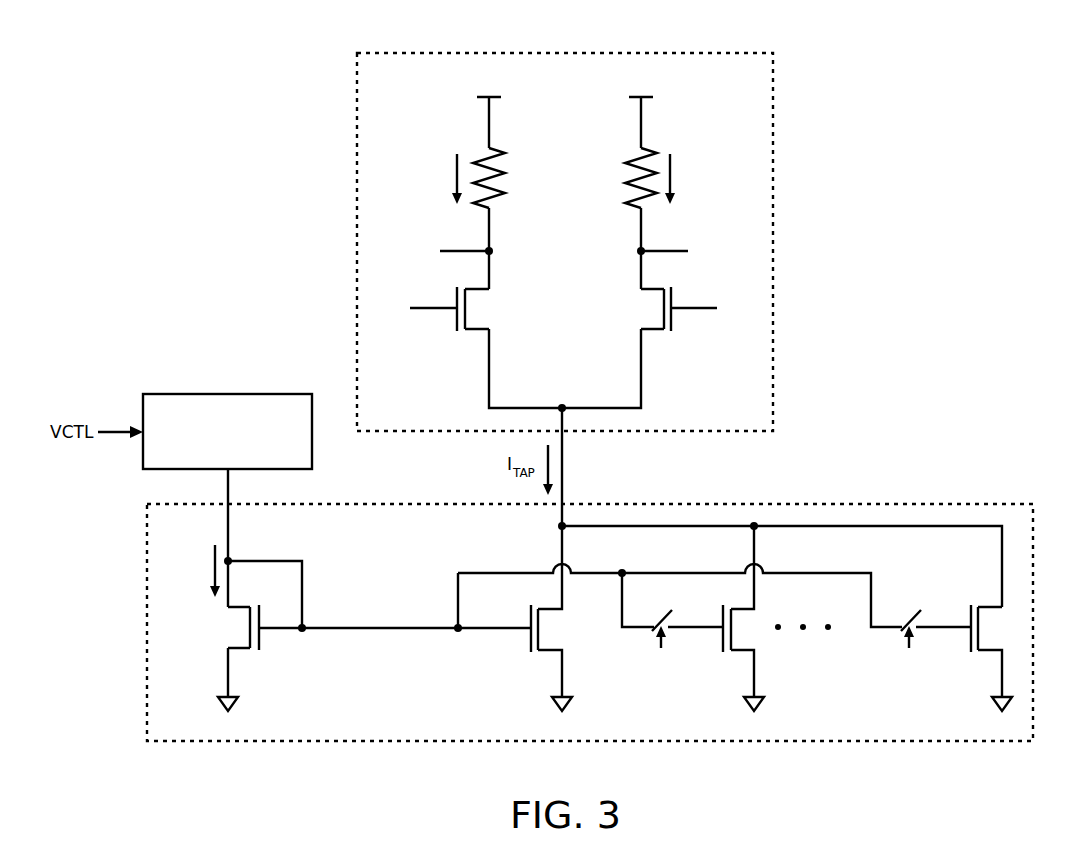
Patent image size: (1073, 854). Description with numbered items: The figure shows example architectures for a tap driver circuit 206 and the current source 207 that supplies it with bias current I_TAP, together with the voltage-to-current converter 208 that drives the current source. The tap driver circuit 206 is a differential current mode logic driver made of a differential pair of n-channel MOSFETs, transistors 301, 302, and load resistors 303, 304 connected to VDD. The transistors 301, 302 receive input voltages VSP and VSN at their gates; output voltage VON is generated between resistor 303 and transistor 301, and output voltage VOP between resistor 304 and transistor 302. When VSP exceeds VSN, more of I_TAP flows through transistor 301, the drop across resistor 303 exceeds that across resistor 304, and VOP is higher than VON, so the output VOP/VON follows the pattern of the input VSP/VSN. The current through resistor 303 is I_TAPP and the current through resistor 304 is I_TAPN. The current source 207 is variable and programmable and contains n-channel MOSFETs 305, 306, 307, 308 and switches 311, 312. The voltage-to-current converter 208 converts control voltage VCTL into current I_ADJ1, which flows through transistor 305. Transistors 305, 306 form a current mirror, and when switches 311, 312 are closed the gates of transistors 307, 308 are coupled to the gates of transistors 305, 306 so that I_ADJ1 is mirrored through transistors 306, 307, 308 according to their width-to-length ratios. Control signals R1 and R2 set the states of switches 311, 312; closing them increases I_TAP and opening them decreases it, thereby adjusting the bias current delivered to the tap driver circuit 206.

The tap driver circuit 206 is at (737, 53).
The current source 207 is at (845, 503).
The voltage-to-current converter 208 is at (222, 394).
The transistor 301 is at (453, 327).
The transistor 302 is at (676, 327).
The load resistor 303 is at (495, 190).
The load resistor 304 is at (632, 183).
The transistor 305 is at (262, 645).
The transistor 306 is at (530, 645).
The transistor 307 is at (722, 645).
The transistor 308 is at (970, 645).
The switch 311 is at (671, 611).
The switch 312 is at (920, 611).